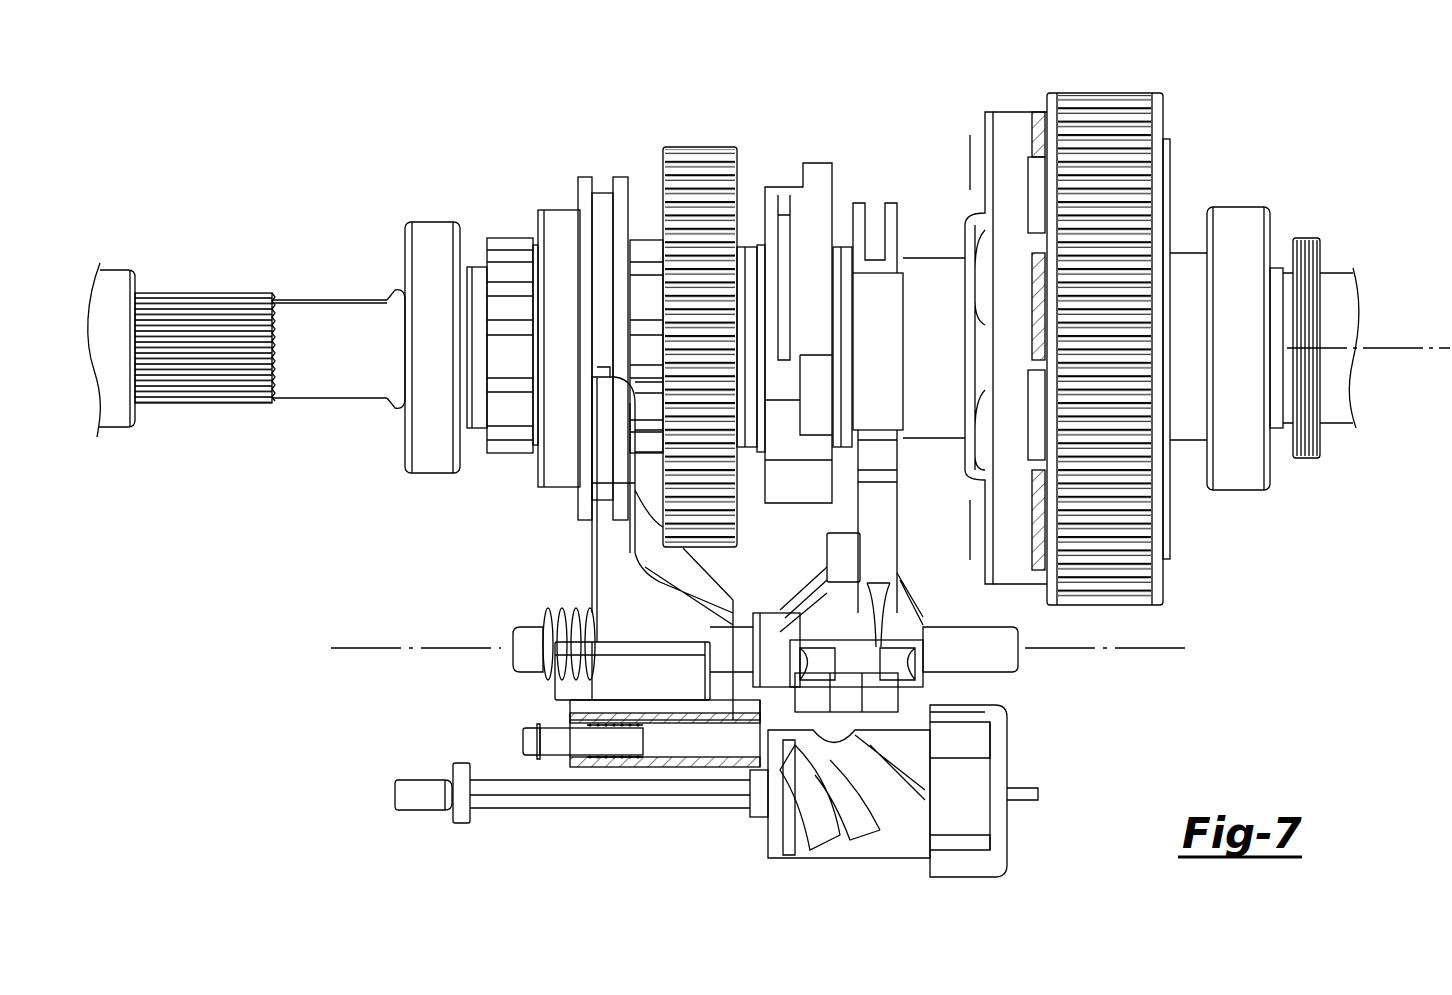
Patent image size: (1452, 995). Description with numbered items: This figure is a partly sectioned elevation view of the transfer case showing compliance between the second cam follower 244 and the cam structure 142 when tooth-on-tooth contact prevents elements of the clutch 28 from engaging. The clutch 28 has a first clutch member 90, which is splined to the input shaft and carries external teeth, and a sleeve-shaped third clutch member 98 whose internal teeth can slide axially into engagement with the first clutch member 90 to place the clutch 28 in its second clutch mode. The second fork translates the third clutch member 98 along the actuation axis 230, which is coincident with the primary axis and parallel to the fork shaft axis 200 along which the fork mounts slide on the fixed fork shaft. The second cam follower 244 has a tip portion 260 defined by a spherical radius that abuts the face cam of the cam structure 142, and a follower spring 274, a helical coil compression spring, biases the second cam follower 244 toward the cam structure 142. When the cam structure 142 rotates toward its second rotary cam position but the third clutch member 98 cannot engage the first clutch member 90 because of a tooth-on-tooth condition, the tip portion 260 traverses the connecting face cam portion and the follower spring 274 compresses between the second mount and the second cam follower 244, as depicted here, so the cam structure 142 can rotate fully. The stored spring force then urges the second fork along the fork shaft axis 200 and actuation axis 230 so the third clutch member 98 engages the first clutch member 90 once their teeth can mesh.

The clutch 28 is at (609, 152).
The first clutch member 90 is at (513, 262).
The third clutch member 98 is at (553, 222).
The cam structure 142 is at (857, 817).
The fork shaft axis 200 is at (1105, 648).
The actuation axis 230 is at (1390, 345).
The second cam follower 244 is at (740, 778).
The tip portion 260 is at (768, 742).
The follower spring 274 is at (602, 762).